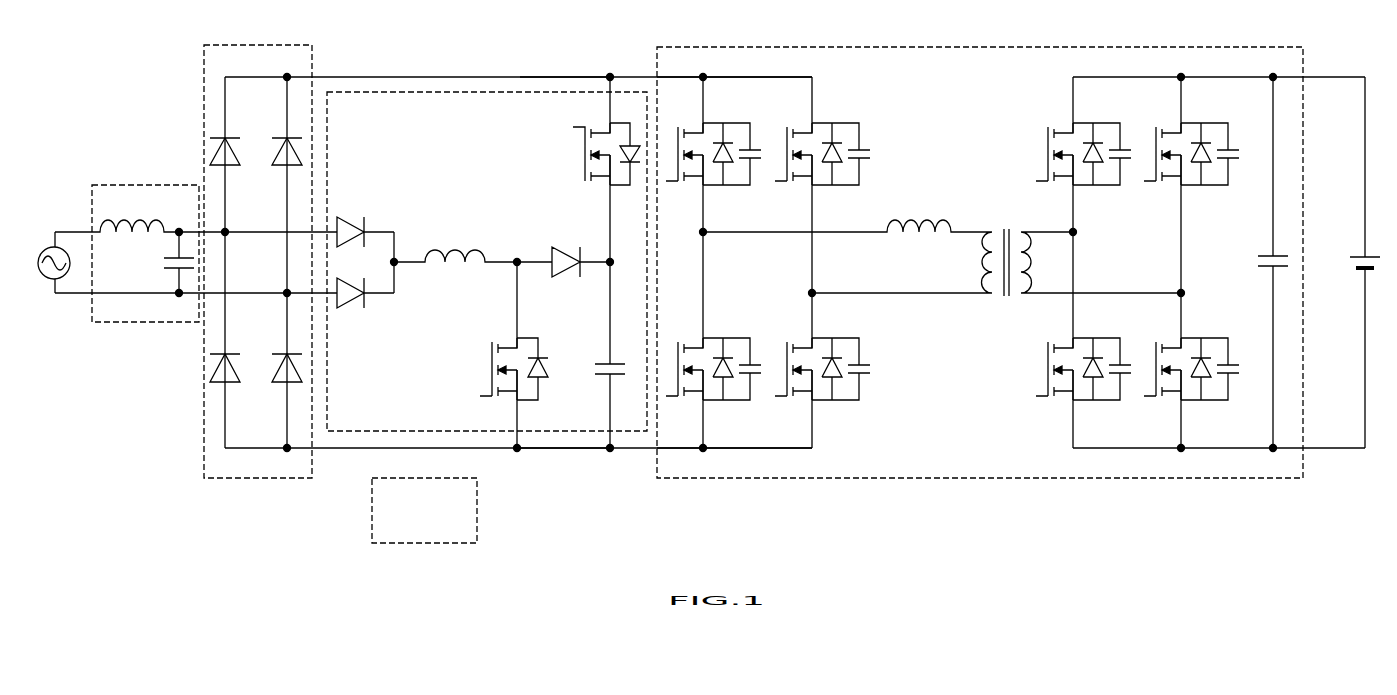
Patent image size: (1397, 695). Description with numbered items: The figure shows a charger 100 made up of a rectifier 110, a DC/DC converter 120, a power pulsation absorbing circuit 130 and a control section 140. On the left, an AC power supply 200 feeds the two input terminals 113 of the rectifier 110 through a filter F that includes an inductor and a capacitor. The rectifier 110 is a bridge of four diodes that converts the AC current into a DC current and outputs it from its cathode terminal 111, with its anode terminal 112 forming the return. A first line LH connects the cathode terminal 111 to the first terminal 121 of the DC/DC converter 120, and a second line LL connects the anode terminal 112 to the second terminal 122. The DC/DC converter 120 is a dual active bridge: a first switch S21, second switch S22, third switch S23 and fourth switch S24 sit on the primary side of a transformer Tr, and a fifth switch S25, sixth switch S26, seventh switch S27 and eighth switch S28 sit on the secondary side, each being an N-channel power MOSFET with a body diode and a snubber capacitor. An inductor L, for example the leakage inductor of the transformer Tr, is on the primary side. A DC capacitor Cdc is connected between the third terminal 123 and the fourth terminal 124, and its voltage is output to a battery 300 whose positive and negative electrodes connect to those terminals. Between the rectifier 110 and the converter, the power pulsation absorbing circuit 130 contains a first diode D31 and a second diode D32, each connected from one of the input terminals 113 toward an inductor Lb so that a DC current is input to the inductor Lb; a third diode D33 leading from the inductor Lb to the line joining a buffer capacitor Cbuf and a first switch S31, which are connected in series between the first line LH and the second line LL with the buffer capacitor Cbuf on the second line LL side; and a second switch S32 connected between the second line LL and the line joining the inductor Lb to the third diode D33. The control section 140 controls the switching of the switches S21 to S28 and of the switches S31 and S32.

The charger 100 is at (400, 24).
The rectifier 110 is at (259, 45).
The cathode terminal 111 is at (288, 76).
The anode terminal 112 is at (287, 450).
The input terminals 113 is at (285, 292).
The DC/DC converter 120 is at (901, 47).
The first terminal 121 is at (704, 76).
The second terminal 122 is at (702, 450).
The third terminal 123 is at (1275, 76).
The fourth terminal 124 is at (1272, 450).
The power pulsation absorbing circuit 130 is at (456, 92).
The control section 140 is at (424, 510).
The AC power supply 200 is at (49, 246).
The battery 300 is at (1370, 249).
The filter F is at (134, 186).
The first line LH is at (534, 77).
The second line LL is at (583, 449).
The first diode D31 is at (364, 221).
The second diode D32 is at (364, 304).
The third diode D33 is at (563, 274).
The inductor Lb is at (455, 266).
The first switch S31 is at (606, 163).
The second switch S32 is at (514, 379).
The buffer capacitor Cbuf is at (597, 384).
The first switch S21 is at (713, 164).
The second switch S22 is at (713, 379).
The third switch S23 is at (822, 164).
The fourth switch S24 is at (822, 379).
The fifth switch S25 is at (1083, 164).
The sixth switch S26 is at (1083, 379).
The seventh switch S27 is at (1191, 164).
The eighth switch S28 is at (1191, 379).
The inductor L is at (841, 236).
The transformer Tr is at (1082, 275).
The DC capacitor Cdc is at (1266, 262).